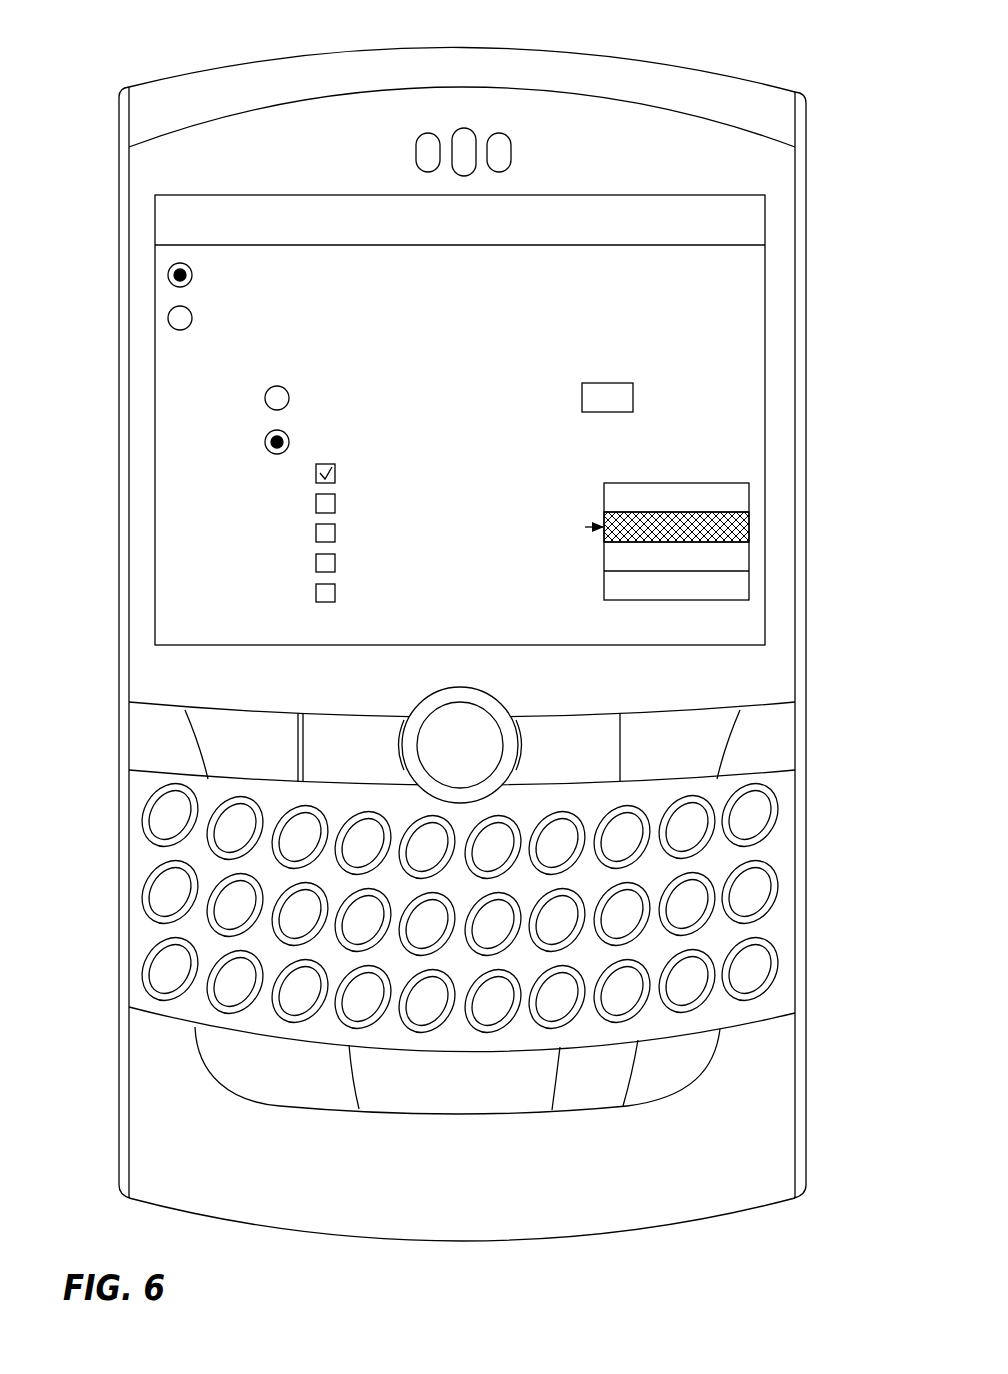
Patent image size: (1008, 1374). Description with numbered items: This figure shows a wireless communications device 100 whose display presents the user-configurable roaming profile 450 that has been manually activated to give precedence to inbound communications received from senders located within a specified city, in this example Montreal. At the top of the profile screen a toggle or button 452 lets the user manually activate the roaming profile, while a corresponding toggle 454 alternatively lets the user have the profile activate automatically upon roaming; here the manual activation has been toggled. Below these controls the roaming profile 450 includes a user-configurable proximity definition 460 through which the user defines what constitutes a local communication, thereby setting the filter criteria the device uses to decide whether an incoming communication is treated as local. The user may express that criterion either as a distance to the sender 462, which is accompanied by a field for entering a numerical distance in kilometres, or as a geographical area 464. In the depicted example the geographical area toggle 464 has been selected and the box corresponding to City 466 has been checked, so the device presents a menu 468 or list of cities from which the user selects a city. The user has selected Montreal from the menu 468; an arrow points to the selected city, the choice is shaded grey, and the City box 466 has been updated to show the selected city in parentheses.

The wireless communications device 100 is at (140, 82).
The roaming profile 450 is at (157, 223).
The manual activation toggle 452 is at (167, 273).
The automatic activation toggle 454 is at (165, 319).
The proximity definition 460 is at (218, 363).
The distance to sender option 462 is at (264, 402).
The geographical area toggle 464 is at (264, 444).
The City box 466 is at (527, 457).
The city menu 468 is at (691, 604).